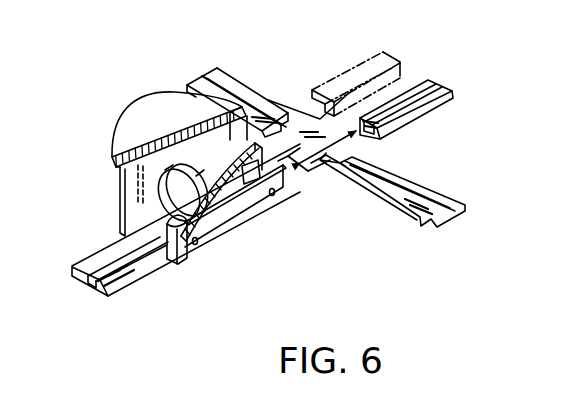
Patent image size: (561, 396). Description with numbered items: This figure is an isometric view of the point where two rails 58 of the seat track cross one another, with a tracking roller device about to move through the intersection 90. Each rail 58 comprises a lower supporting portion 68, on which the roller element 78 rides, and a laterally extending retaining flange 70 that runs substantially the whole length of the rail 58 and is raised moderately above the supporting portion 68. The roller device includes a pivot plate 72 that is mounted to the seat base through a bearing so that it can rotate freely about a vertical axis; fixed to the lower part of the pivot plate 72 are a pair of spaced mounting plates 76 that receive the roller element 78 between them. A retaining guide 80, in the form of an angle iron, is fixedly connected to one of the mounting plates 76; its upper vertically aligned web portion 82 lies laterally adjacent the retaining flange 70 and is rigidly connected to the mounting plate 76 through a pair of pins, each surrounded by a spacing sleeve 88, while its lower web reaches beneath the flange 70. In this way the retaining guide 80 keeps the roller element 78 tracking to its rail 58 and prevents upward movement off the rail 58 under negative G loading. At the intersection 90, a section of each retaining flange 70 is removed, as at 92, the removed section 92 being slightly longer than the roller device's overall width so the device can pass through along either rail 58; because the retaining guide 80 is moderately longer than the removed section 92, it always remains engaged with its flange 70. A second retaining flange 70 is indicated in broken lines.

The rail 58 is at (150, 277).
The lower supporting portion 68 is at (93, 272).
The retaining flange 70 is at (124, 295).
The pivot plate 72 is at (134, 111).
The mounting plate 76 is at (119, 184).
The roller element 78 is at (163, 194).
The retaining guide 80 is at (231, 240).
The upper vertically aligned web portion 82 is at (253, 212).
The spacing sleeve 88 is at (173, 256).
The intersection 90 is at (302, 96).
The removed flange section 92 is at (338, 140).